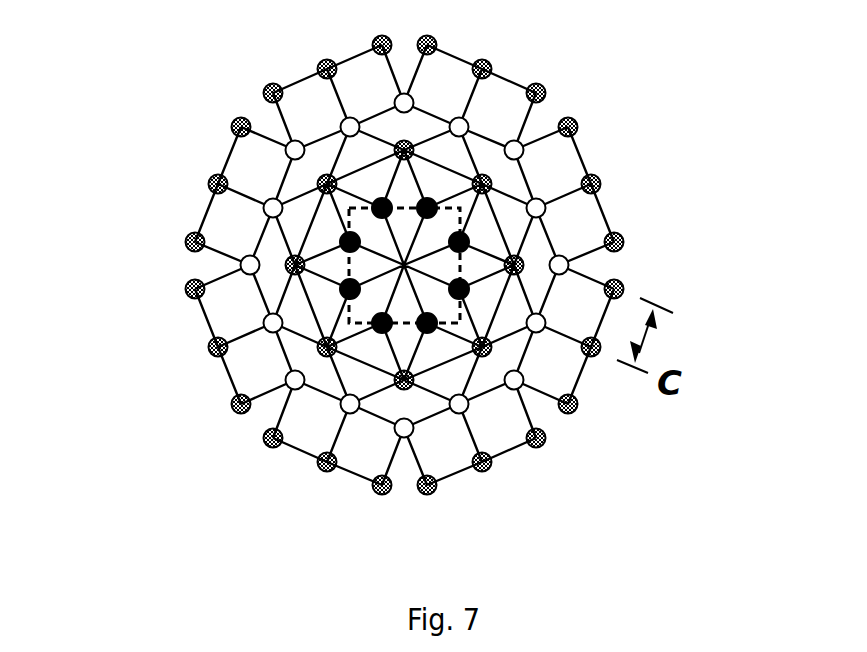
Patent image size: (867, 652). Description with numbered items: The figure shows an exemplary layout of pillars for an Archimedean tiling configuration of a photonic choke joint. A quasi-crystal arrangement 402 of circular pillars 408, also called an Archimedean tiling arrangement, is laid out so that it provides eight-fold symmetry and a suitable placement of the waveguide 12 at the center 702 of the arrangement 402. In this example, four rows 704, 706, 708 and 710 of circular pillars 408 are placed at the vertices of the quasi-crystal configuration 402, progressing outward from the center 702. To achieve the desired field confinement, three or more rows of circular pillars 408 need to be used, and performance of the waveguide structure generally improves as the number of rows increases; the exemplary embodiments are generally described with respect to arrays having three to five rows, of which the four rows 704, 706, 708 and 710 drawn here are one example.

The arrangement of circular pillars 402 is at (396, 277).
The waveguide 12 is at (427, 233).
The center 702 is at (372, 232).
The row of circular pillars 704 is at (378, 325).
The row of circular pillars 706 is at (293, 273).
The row of circular pillars 708 is at (268, 213).
The row of circular pillars 710 is at (233, 127).
The circular pillar 408 is at (540, 437).